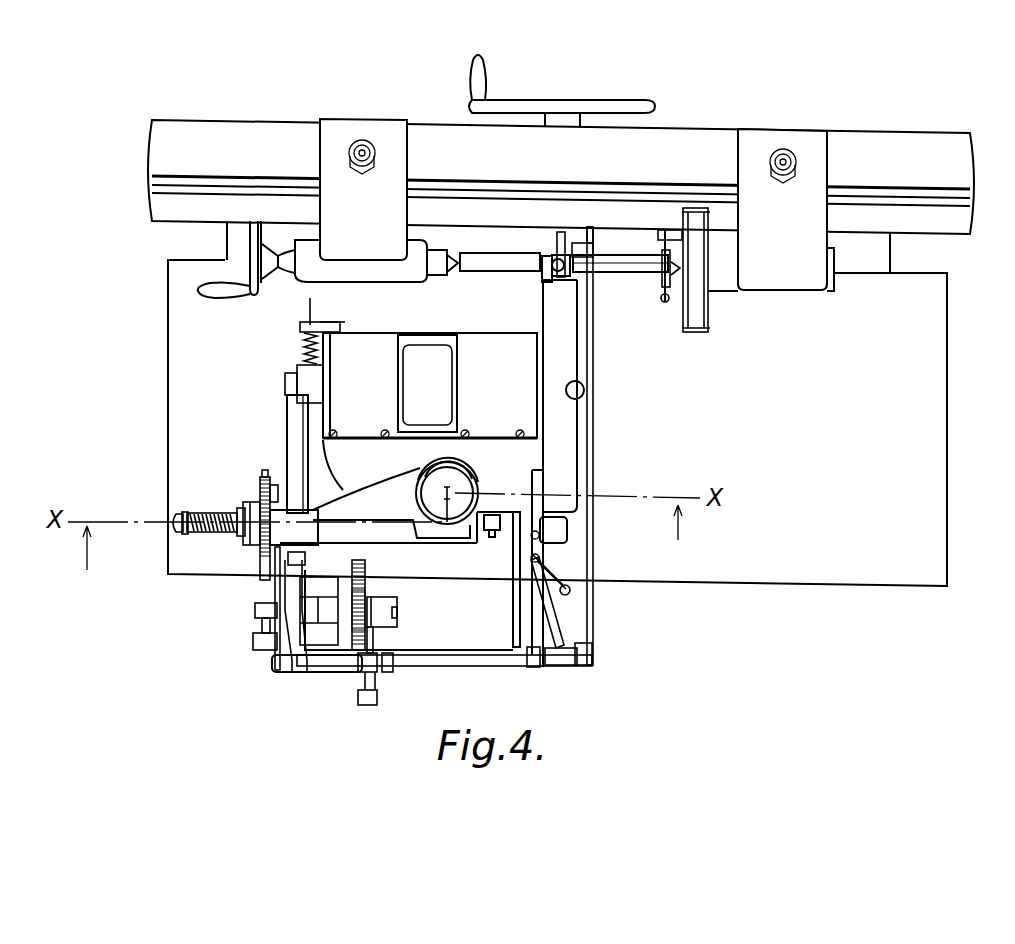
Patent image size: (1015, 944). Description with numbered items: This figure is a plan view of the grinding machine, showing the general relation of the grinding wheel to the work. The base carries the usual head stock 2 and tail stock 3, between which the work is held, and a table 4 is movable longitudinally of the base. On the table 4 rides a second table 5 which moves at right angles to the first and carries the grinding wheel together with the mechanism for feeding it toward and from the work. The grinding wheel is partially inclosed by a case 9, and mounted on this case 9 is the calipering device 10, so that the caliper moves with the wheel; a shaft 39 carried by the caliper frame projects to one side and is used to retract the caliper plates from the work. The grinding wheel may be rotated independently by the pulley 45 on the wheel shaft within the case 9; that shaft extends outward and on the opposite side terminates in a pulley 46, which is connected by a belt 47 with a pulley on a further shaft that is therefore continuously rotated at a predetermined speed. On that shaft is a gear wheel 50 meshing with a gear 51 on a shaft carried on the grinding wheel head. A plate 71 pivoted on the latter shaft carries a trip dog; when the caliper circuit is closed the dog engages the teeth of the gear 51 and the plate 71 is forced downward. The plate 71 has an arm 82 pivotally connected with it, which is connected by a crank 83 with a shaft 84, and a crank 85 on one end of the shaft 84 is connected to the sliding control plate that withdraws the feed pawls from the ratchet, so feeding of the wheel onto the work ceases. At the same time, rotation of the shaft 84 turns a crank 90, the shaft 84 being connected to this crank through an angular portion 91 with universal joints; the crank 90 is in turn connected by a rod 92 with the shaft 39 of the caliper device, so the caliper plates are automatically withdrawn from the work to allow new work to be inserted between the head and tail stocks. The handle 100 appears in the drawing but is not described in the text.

The head stock 2 is at (771, 210).
The tail stock 3 is at (344, 201).
The table 4 is at (557, 403).
The second table 5 is at (408, 491).
The case 9 is at (557, 473).
The calipering device 10 is at (547, 275).
The shaft 39 is at (577, 243).
The pulley 45 is at (427, 383).
The pulley 46 is at (285, 387).
The belt 47 is at (287, 440).
The gear wheel 50 is at (363, 573).
The gear 51 is at (365, 598).
The plate 71 is at (368, 623).
The arm 82 is at (377, 681).
The crank 83 is at (364, 681).
The shaft 84 is at (380, 653).
The crank 85 is at (292, 674).
The crank 90 is at (582, 666).
The angular portion 91 is at (466, 664).
The rod 92 is at (592, 488).
The hand lever 100 is at (523, 103).